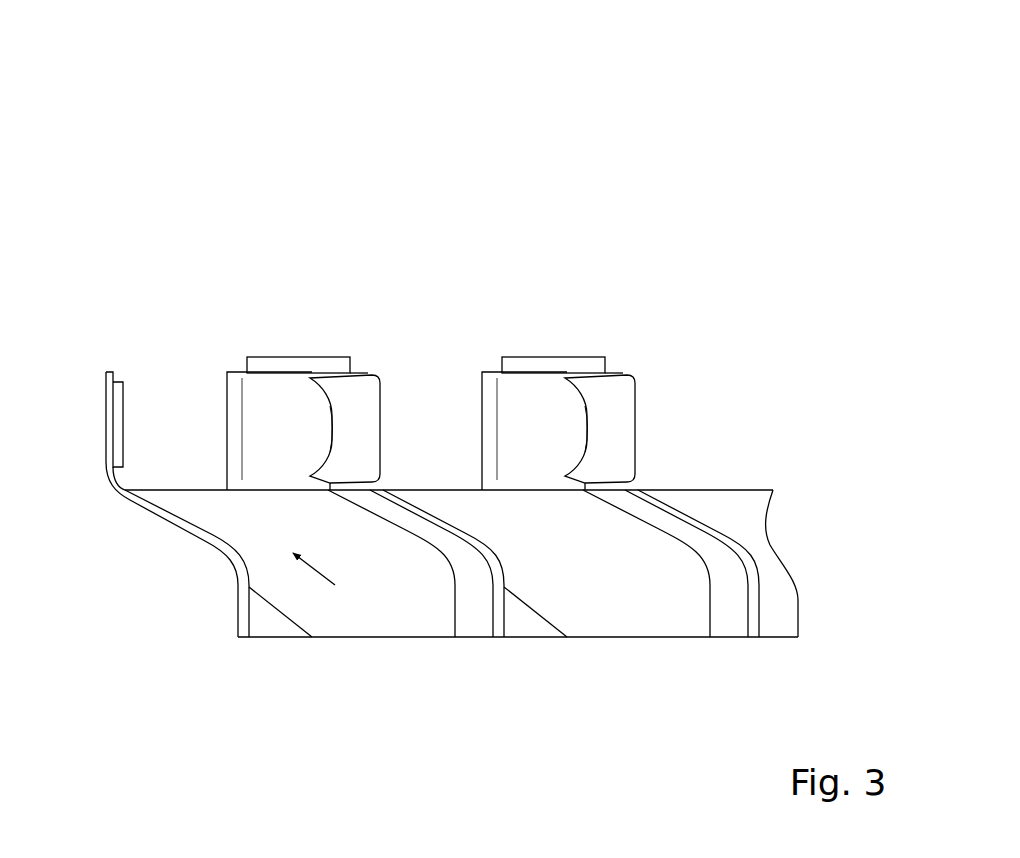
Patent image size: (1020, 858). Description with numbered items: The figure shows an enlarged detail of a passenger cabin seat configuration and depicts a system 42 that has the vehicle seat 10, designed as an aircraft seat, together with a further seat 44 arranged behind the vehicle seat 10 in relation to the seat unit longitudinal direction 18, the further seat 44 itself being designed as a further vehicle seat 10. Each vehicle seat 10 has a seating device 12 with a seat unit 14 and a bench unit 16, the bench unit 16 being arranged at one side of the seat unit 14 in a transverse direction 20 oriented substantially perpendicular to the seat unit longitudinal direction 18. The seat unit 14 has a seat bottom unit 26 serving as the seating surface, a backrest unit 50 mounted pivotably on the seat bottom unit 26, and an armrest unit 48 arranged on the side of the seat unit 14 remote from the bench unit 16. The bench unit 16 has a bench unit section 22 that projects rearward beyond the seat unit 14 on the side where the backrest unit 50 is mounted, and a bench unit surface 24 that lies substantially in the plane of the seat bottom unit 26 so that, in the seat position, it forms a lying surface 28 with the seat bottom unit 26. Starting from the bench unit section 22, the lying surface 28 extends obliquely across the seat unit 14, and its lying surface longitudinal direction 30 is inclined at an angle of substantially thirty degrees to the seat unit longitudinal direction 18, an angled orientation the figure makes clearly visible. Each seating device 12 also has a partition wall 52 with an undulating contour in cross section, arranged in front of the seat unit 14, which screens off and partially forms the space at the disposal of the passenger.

The vehicle seat 10 is at (288, 203).
The seating device 12 is at (178, 203).
The seat unit 14 is at (376, 255).
The bench unit 16 is at (371, 648).
The seat unit longitudinal direction 18 is at (258, 293).
The transverse direction 20 is at (150, 290).
The bench unit section 22 is at (430, 613).
The bench unit surface 24 is at (382, 602).
The seat bottom unit 26 is at (265, 395).
The lying surface 28 is at (288, 582).
The lying surface longitudinal direction 30 is at (317, 570).
The system 42 is at (796, 111).
The further seat 44 is at (560, 201).
The armrest unit 48 is at (315, 368).
The backrest unit 50 is at (363, 403).
The partition wall 52 is at (237, 592).